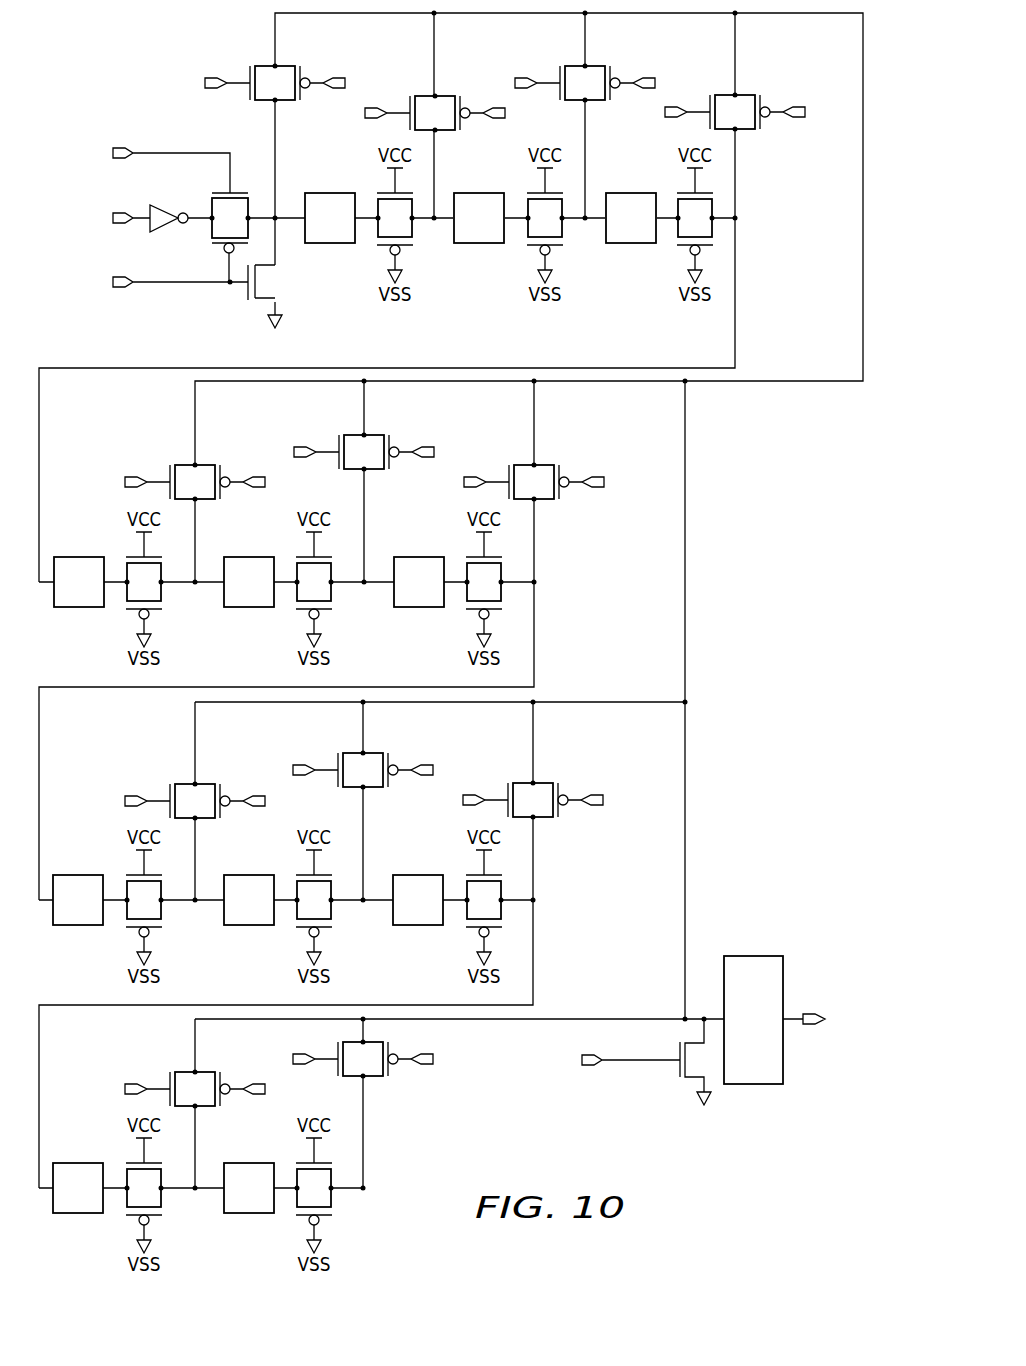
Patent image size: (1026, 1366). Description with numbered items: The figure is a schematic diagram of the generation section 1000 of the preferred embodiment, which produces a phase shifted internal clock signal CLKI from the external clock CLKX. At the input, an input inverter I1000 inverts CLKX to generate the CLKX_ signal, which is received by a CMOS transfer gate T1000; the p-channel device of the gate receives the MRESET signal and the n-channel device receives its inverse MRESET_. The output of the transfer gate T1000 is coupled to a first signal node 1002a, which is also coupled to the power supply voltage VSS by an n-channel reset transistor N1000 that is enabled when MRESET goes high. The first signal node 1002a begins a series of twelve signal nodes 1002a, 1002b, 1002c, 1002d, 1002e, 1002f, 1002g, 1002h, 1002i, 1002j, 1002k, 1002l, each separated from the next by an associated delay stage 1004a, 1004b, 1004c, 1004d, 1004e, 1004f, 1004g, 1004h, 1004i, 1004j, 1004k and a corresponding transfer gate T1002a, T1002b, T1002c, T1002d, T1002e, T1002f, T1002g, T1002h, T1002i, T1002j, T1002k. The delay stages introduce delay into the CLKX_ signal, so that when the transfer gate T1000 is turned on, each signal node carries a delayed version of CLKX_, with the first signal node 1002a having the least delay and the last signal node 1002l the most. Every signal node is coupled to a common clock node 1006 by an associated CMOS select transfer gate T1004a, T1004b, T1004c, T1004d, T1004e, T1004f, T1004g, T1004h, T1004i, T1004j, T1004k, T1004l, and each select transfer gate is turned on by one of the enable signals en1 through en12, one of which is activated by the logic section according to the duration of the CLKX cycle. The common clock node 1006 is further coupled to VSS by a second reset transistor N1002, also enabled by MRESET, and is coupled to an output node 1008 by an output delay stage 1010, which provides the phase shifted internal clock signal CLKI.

The generation section 1000 is at (454, 644).
The first signal node 1002a is at (279, 222).
The signal node 1002b is at (437, 222).
The signal node 1002c is at (588, 222).
The signal node 1002d is at (737, 220).
The signal node 1002e is at (194, 588).
The signal node 1002f is at (363, 588).
The signal node 1002g is at (537, 582).
The signal node 1002h is at (193, 906).
The signal node 1002i is at (362, 906).
The signal node 1002j is at (535, 905).
The signal node 1002k is at (193, 1194).
The signal node 1002l is at (352, 1190).
The delay stage 1004a is at (332, 193).
The delay stage 1004b is at (482, 193).
The delay stage 1004c is at (632, 193).
The delay stage 1004d is at (78, 607).
The delay stage 1004e is at (248, 607).
The delay stage 1004f is at (418, 607).
The delay stage 1004g is at (78, 925).
The delay stage 1004h is at (248, 925).
The delay stage 1004i is at (418, 925).
The delay stage 1004j is at (78, 1213).
The delay stage 1004k is at (248, 1213).
The common clock node 1006 is at (687, 704).
The output node 1008 is at (806, 1026).
The output delay stage 1010 is at (750, 956).
The CMOS transfer gate T1000 is at (212, 203).
The input inverter I1000 is at (167, 231).
The n-channel reset transistor N1000 is at (248, 289).
The second reset transistor N1002 is at (678, 1070).
The transfer gate T1002a is at (378, 245).
The transfer gate T1002b is at (528, 245).
The transfer gate T1002c is at (678, 245).
The transfer gate T1002d is at (135, 557).
The transfer gate T1002e is at (306, 558).
The transfer gate T1002f is at (476, 558).
The transfer gate T1002g is at (135, 875).
The transfer gate T1002h is at (306, 875).
The transfer gate T1002i is at (476, 875).
The transfer gate T1002j is at (135, 1163).
The transfer gate T1002k is at (306, 1163).
The CMOS select transfer gate T1004a is at (257, 66).
The CMOS select transfer gate T1004b is at (425, 96).
The CMOS select transfer gate T1004c is at (584, 66).
The CMOS select transfer gate T1004d is at (748, 95).
The CMOS select transfer gate T1004e is at (178, 465).
The CMOS select transfer gate T1004f is at (348, 435).
The CMOS select transfer gate T1004g is at (546, 500).
The CMOS select transfer gate T1004h is at (178, 784).
The CMOS select transfer gate T1004i is at (346, 753).
The CMOS select transfer gate T1004j is at (545, 818).
The CMOS select transfer gate T1004k is at (178, 1072).
The CMOS select transfer gate T1004l is at (382, 1078).